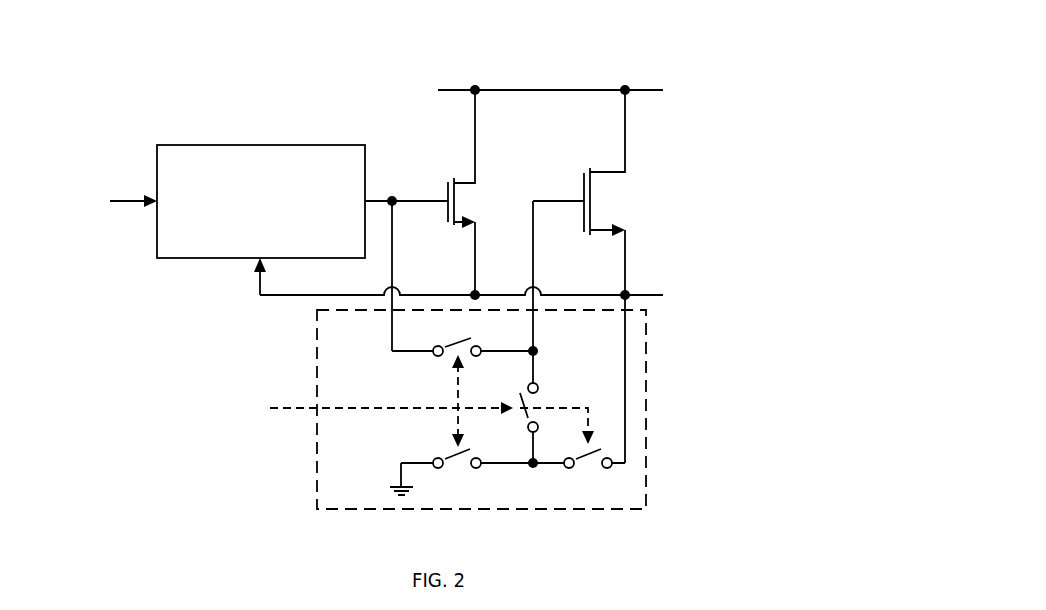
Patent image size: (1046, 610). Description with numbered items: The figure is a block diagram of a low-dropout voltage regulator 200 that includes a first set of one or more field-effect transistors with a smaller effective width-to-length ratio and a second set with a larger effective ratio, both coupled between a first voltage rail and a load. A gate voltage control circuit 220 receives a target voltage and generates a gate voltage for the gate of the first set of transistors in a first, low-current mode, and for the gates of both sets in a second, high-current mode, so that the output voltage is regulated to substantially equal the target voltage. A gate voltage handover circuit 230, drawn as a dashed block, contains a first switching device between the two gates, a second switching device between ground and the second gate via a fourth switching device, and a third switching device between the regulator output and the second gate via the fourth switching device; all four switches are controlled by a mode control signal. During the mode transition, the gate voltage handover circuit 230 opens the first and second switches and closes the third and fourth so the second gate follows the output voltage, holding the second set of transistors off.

The low-dropout (LDO) voltage regulator 200 is at (697, 91).
The gate voltage control circuit 220 is at (280, 244).
The gate voltage handover circuit 230 is at (367, 340).